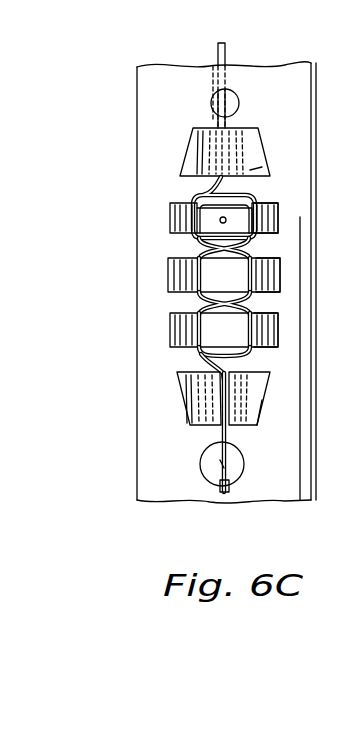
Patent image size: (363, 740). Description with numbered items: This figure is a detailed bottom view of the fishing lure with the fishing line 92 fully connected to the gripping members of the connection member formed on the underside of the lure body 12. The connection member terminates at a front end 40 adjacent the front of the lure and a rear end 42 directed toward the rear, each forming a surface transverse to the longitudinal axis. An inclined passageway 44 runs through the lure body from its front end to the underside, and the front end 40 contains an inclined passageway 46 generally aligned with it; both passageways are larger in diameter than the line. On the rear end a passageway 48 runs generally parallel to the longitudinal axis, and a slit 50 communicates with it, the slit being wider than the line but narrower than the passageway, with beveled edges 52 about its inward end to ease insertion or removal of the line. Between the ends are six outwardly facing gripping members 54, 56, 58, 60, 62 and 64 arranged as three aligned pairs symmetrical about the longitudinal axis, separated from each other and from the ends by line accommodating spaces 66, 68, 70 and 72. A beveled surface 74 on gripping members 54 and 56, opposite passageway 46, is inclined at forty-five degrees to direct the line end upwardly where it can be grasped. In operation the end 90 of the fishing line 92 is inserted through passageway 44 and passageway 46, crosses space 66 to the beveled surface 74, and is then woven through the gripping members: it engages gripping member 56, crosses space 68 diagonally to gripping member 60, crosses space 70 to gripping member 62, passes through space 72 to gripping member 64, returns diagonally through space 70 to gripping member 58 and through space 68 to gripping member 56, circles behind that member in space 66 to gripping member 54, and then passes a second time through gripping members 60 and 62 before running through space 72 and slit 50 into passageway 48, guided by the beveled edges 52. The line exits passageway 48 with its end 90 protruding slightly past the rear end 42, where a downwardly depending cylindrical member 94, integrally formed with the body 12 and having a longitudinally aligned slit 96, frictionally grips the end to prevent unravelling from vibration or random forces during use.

The body 12 is at (150, 483).
The front end of the connection member 40 is at (190, 138).
The rear end of the connection member 42 is at (190, 400).
The inclined passageway 44 is at (240, 87).
The inclined passageway 46 is at (262, 167).
The passageway 48 is at (256, 434).
The slit 50 is at (262, 396).
The beveled edges 52 is at (252, 362).
The gripping member 54 is at (170, 216).
The gripping member 56 is at (280, 223).
The gripping member 58 is at (168, 275).
The gripping member 60 is at (282, 272).
The gripping member 62 is at (170, 331).
The gripping member 64 is at (280, 332).
The line accommodating space 66 is at (262, 192).
The line accommodating space 68 is at (167, 249).
The line accommodating space 70 is at (167, 302).
The line accommodating space 72 is at (175, 362).
The beveled surface 74 is at (262, 200).
The end of fishing line 90 is at (212, 494).
The fishing line 92 is at (240, 103).
The cylindrical member 94 is at (240, 468).
The slit 96 is at (218, 463).